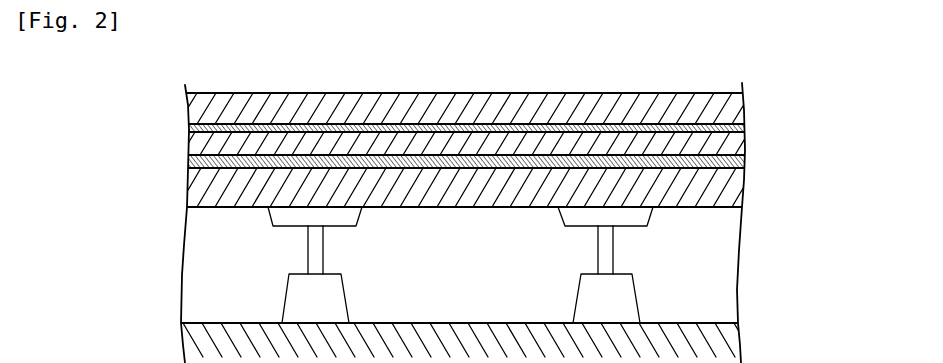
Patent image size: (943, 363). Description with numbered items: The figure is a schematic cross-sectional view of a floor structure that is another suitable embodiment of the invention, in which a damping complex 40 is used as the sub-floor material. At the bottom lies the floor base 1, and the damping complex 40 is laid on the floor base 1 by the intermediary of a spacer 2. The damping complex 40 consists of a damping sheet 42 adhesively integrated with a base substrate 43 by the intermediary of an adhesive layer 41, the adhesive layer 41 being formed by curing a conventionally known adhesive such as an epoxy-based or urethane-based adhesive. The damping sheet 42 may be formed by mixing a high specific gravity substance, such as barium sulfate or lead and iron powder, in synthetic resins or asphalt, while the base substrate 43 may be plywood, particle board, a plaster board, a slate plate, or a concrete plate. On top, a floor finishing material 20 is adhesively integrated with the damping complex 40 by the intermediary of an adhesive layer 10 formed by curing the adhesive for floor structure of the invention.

The floor base 1 is at (686, 328).
The spacer 2 is at (318, 256).
The adhesive layer 10 is at (738, 127).
The floor finishing material 20 is at (736, 100).
The damping complex 40 is at (507, 177).
The adhesive layer 41 is at (740, 162).
The damping sheet 42 is at (738, 146).
The base substrate 43 is at (730, 197).